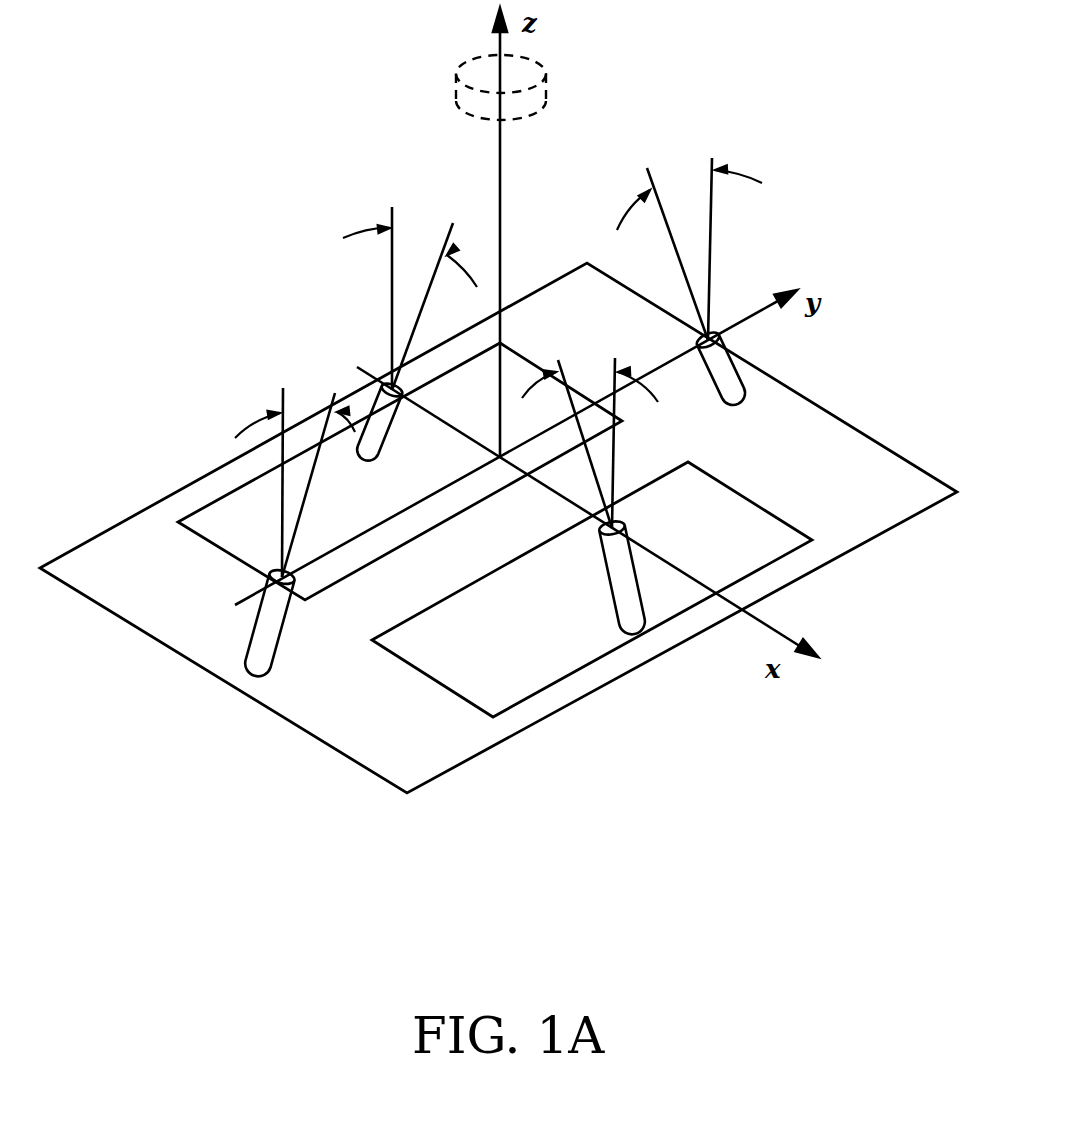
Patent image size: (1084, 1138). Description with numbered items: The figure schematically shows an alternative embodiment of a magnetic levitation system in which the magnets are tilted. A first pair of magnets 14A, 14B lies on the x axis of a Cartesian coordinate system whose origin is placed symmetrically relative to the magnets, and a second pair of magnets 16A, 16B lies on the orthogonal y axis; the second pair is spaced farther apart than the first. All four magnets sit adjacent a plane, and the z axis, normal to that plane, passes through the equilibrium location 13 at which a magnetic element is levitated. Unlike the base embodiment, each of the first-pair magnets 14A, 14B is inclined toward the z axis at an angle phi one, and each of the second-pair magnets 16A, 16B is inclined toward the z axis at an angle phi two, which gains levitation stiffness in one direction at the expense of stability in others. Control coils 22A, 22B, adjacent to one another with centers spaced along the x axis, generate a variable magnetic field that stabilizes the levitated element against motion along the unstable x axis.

The equilibrium location 13 is at (457, 82).
The first magnet of first pair 14A is at (621, 587).
The second magnet of first pair 14B is at (381, 445).
The first magnet of second pair 16A is at (263, 637).
The second magnet of second pair 16B is at (733, 378).
The first control coil 22A is at (573, 673).
The second control coil 22B is at (221, 497).